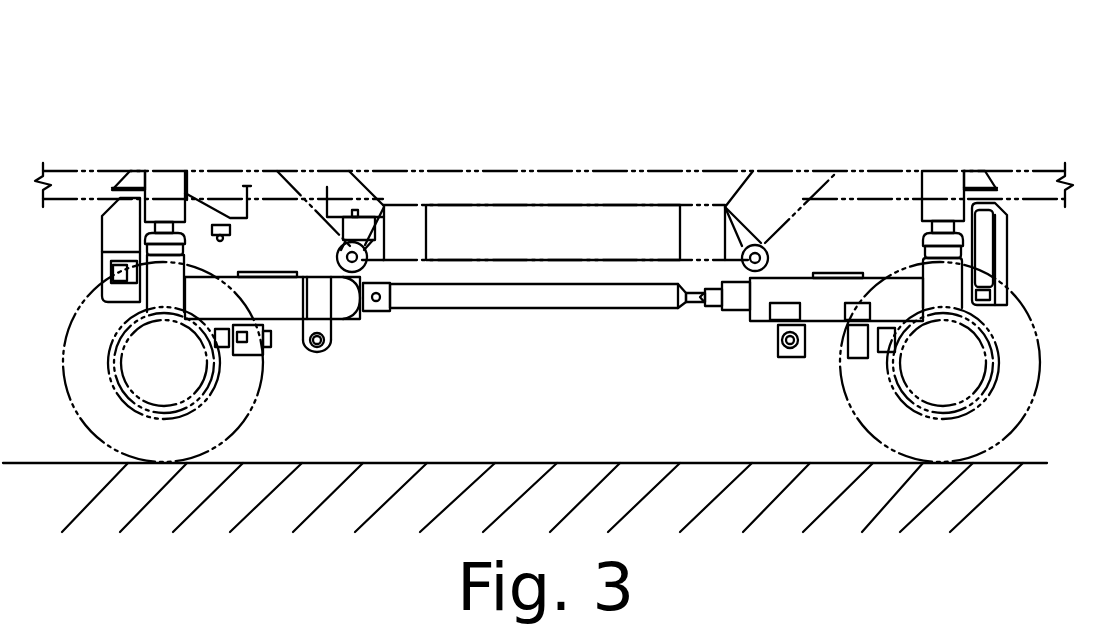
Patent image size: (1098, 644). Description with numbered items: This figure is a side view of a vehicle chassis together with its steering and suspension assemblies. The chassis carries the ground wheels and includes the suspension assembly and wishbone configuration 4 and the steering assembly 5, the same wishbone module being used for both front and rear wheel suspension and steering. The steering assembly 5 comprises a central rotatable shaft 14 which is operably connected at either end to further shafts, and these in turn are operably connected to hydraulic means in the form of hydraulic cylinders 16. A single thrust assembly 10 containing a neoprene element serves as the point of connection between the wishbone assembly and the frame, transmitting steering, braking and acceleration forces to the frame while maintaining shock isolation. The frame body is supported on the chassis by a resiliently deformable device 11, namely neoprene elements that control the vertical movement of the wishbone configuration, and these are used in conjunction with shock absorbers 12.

The suspension assembly and wishbone configuration 4 is at (165, 285).
The steering assembly 5 is at (232, 340).
The thrust assembly 10 is at (352, 312).
The resiliently deformable device 11 is at (173, 233).
The shock absorber 12 is at (980, 237).
The central rotatable shaft 14 is at (563, 298).
The hydraulic cylinder 16 is at (318, 352).